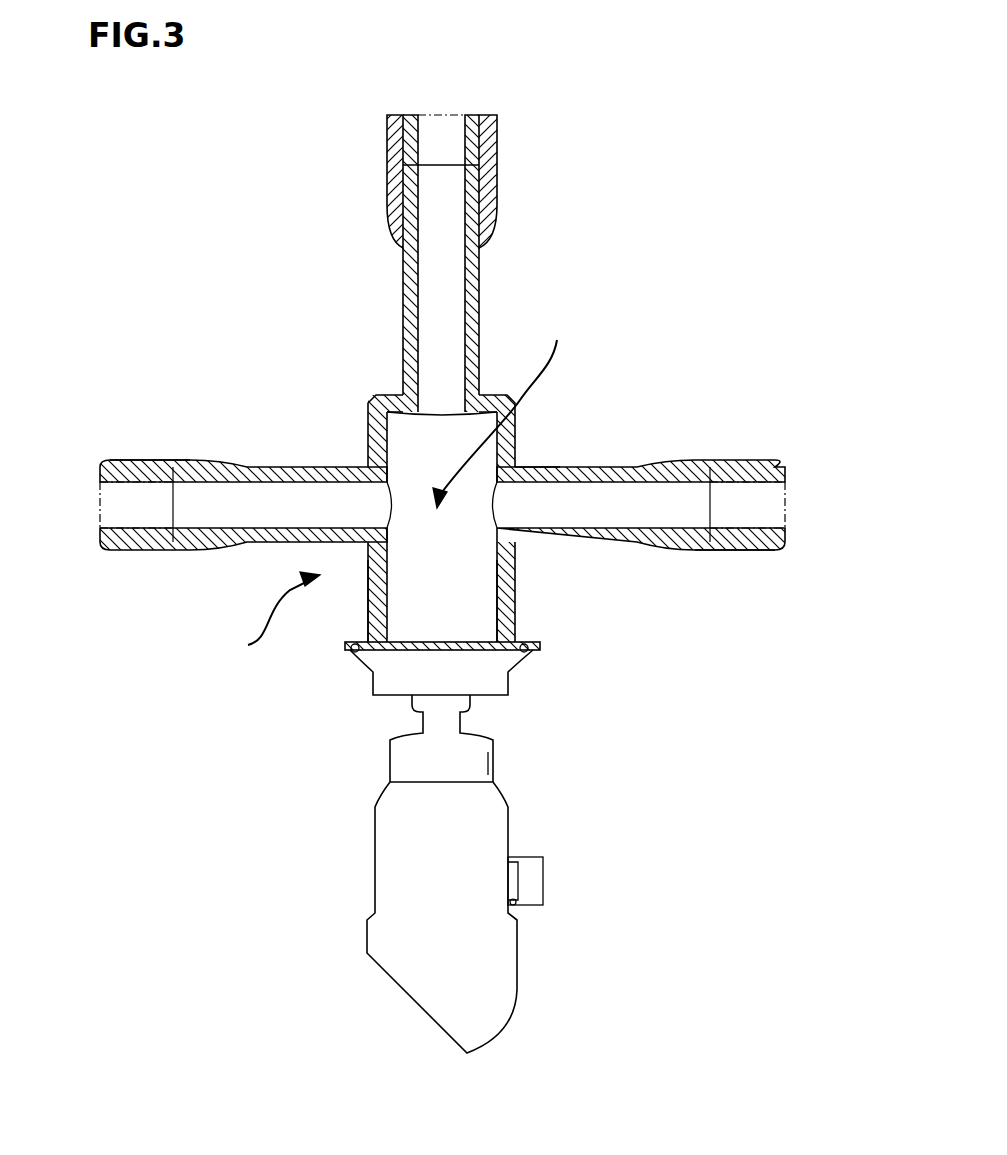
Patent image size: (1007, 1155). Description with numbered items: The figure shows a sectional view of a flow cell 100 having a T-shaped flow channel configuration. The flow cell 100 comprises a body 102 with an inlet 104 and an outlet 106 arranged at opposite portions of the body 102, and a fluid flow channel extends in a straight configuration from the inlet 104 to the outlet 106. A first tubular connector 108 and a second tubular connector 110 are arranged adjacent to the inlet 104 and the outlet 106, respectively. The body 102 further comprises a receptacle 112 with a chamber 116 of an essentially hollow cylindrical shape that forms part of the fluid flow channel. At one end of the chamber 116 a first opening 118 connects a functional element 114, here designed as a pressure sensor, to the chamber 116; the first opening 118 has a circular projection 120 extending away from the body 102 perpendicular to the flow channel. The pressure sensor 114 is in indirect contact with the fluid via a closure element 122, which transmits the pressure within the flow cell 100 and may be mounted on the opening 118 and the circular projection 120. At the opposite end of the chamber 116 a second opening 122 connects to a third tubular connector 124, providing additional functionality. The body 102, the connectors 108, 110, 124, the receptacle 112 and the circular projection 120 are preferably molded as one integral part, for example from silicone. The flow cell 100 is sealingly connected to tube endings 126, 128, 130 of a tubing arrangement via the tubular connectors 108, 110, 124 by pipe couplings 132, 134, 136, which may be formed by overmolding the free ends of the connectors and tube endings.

The flow cell 100 is at (625, 277).
The body 102 is at (259, 616).
The inlet 104 is at (395, 485).
The outlet 106 is at (517, 462).
The first tubular connector 108 is at (282, 545).
The second tubular connector 110 is at (608, 542).
The receptacle 112 is at (517, 462).
The functional element 114 is at (485, 963).
The chamber 116 is at (509, 408).
The first opening 118 is at (487, 567).
The circular projection 120 is at (362, 595).
The closure element 122 is at (420, 392).
The third tubular connector 124 is at (403, 277).
The tube ending 126 is at (138, 483).
The tube ending 128 is at (743, 483).
The tube ending 130 is at (461, 130).
The pipe coupling 132 is at (140, 460).
The pipe coupling 134 is at (722, 550).
The pipe coupling 136 is at (497, 153).